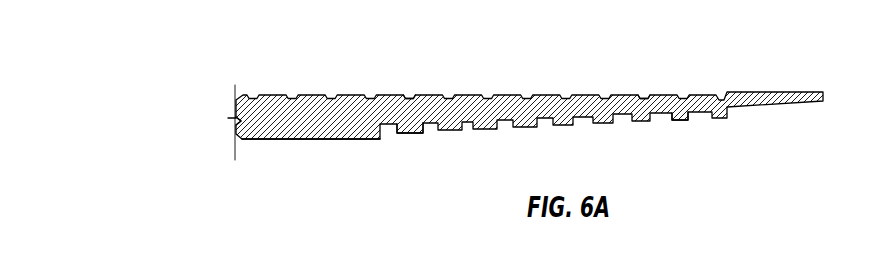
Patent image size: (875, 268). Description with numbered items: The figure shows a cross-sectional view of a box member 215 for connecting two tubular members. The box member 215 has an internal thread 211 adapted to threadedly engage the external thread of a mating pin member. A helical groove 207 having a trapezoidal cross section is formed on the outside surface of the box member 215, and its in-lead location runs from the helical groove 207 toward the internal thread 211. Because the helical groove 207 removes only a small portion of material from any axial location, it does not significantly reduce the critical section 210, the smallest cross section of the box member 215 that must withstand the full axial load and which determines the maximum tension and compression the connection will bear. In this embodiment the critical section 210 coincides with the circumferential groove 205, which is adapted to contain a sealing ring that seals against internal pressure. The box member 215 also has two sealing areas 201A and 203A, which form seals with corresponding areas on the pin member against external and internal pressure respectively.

The sealing area 201A is at (780, 107).
The sealing area 203A is at (341, 139).
The circumferential groove 205 is at (388, 134).
The helical groove 207 is at (643, 94).
The critical section 210 is at (393, 94).
The internal thread 211 is at (673, 120).
The box member 215 is at (234, 113).